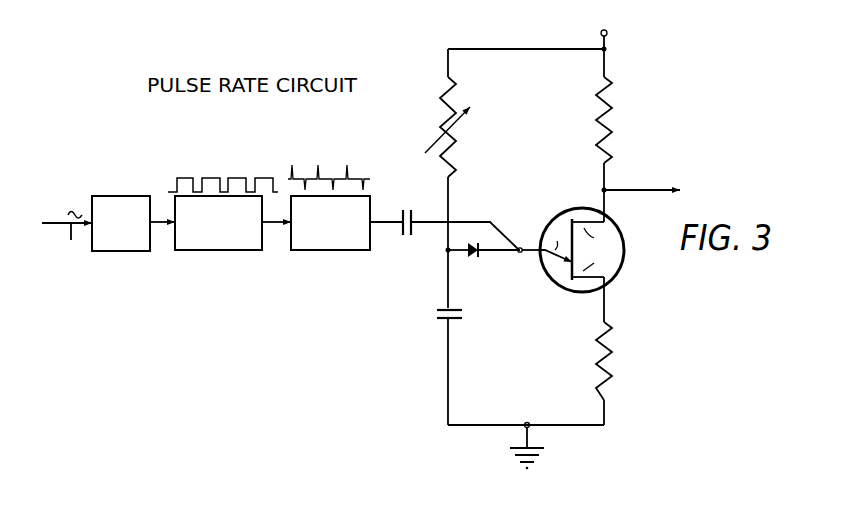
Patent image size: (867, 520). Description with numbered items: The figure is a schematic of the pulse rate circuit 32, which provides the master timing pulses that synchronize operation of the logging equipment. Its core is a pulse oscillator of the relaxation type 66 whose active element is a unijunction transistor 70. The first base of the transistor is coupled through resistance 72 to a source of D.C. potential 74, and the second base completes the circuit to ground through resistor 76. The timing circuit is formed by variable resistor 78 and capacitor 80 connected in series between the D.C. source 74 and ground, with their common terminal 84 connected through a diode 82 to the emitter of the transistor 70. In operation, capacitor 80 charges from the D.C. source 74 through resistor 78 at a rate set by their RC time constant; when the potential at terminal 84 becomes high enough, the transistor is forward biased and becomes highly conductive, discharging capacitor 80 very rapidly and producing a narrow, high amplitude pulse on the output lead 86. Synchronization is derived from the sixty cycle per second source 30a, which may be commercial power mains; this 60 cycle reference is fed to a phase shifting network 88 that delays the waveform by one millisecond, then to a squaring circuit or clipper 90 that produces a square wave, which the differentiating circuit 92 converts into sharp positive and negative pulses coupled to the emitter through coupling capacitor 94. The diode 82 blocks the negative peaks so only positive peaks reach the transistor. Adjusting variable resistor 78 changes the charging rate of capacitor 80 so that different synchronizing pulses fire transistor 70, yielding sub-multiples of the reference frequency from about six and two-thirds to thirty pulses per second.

The 60 c.p.s. source 30a is at (67, 247).
The 60 c.p.s. reference frequency 60 is at (67, 214).
The phase shifting network 88 is at (134, 252).
The squaring circuit or clipper 90 is at (227, 252).
The differentiating circuit 92 is at (323, 252).
The coupling capacitor 94 is at (444, 240).
The common terminal 84 is at (448, 251).
The diode 82 is at (494, 268).
The capacitor 80 is at (462, 314).
The pulse rate circuit 32 is at (390, 286).
The variable resistor 78 is at (459, 153).
The pulse oscillator of the relaxation type 66 is at (538, 120).
The source of D.C. potential 74 is at (607, 33).
The resistance 72 is at (618, 120).
The output lead 86 is at (636, 187).
The unijunction transistor 70 is at (625, 233).
The resistor 76 is at (612, 380).